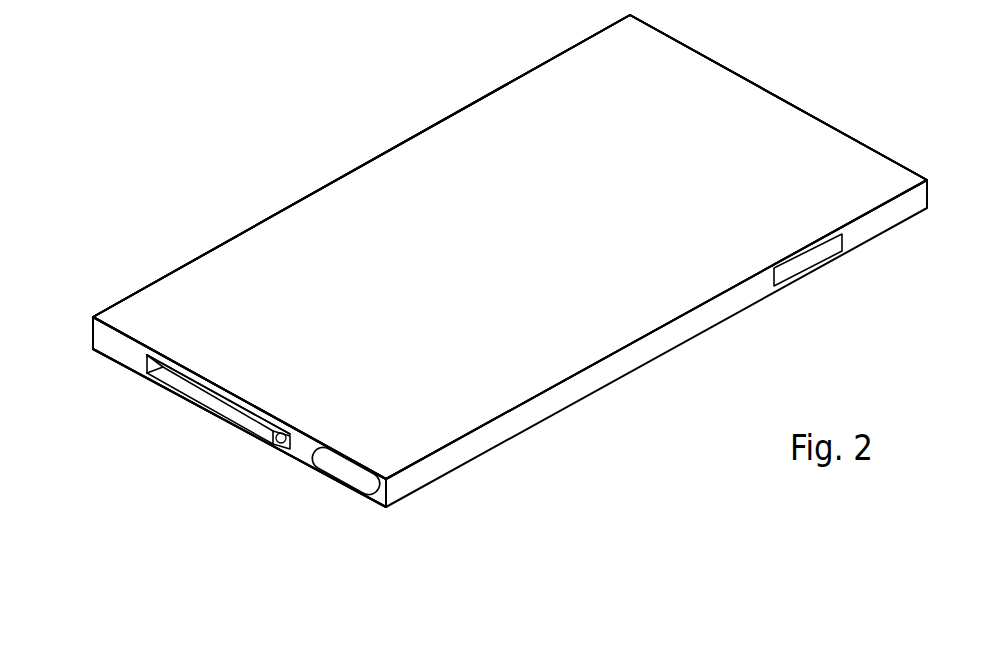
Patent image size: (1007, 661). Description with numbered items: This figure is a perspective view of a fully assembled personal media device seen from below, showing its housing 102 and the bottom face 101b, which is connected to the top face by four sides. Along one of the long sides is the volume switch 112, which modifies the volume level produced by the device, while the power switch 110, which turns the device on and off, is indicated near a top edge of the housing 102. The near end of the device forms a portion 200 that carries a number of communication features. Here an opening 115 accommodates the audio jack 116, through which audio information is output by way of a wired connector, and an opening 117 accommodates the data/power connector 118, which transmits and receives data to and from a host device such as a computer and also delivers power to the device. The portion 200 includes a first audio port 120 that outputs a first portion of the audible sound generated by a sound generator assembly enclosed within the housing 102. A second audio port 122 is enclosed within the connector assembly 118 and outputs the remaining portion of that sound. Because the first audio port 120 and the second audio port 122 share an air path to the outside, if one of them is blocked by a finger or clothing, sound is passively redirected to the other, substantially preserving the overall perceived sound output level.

The housing 102 is at (543, 82).
The power switch 110 is at (870, 143).
The audio jack 116 is at (360, 0).
The opening 115 is at (122, 346).
The portion 200 is at (183, 298).
The bottom face 101b is at (585, 285).
The data/power connector 118 is at (202, 410).
The opening 117 is at (226, 382).
The second audio port 122 is at (277, 447).
The first audio port 120 is at (348, 470).
The volume switch 112 is at (820, 253).